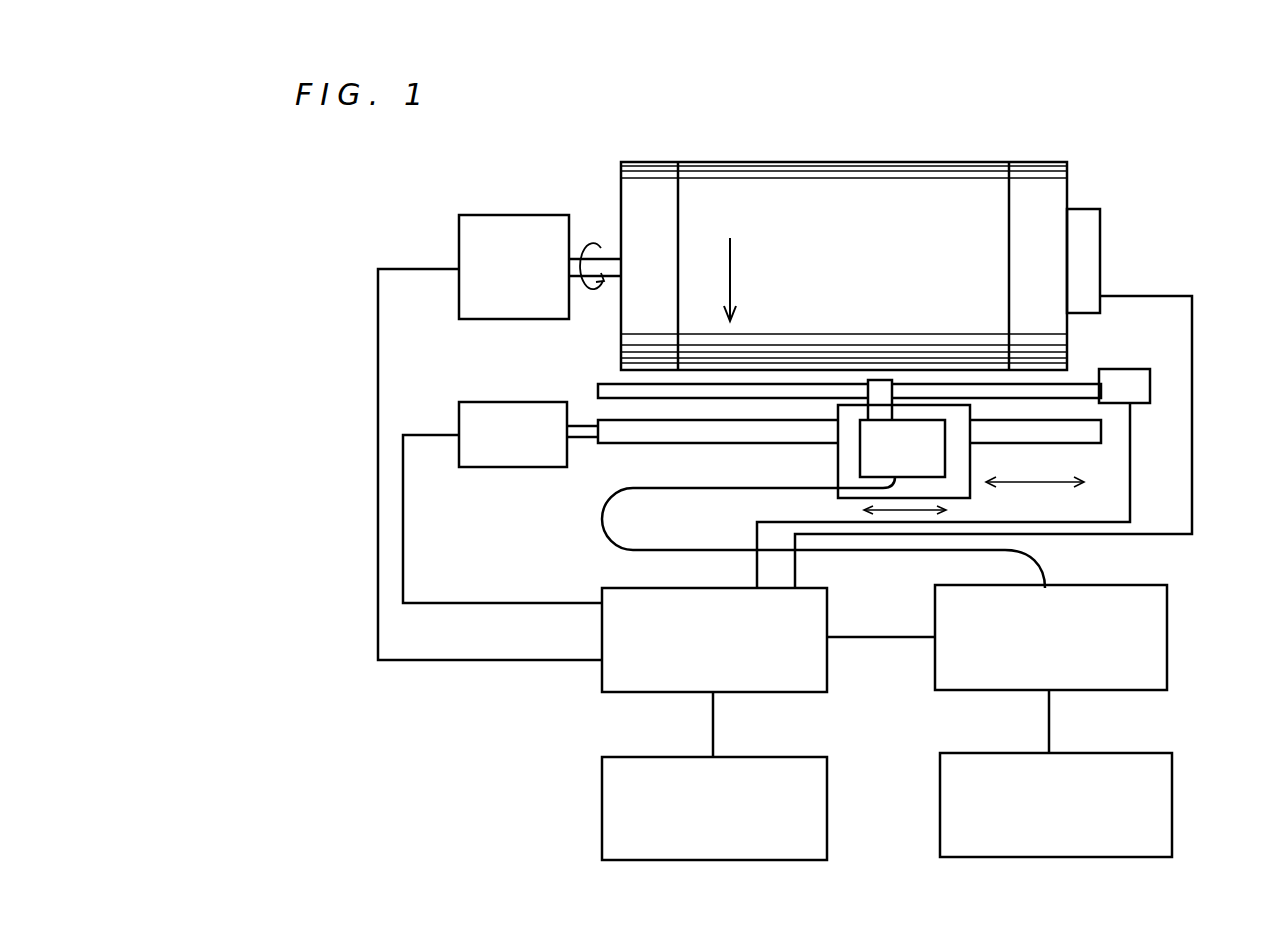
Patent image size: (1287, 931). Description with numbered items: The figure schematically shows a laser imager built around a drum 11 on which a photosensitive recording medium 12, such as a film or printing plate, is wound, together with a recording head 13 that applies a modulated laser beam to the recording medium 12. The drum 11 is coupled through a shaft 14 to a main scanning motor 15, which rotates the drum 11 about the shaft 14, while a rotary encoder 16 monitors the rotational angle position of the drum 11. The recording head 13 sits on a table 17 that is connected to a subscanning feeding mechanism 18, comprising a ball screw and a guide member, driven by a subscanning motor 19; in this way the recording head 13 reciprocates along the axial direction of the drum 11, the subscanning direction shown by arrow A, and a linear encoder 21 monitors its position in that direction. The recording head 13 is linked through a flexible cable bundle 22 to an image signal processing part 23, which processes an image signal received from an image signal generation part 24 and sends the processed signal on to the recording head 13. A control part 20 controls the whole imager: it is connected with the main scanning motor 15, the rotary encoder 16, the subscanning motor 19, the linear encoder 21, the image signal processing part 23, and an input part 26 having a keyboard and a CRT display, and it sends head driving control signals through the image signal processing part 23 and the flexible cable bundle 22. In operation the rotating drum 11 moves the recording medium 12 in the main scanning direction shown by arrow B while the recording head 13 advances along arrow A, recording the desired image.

The drum 11 is at (638, 187).
The photosensitive recording medium 12 is at (910, 190).
The recording head 13 is at (933, 460).
The shaft 14 is at (597, 283).
The main scanning motor 15 is at (505, 228).
The rotary encoder 16 is at (1090, 230).
The table 17 is at (847, 472).
The subscanning feeding mechanism 18 is at (622, 436).
The subscanning motor 19 is at (490, 452).
The control part 20 is at (602, 677).
The linear encoder 21 is at (1133, 376).
The flexible cable bundle 22 is at (608, 538).
The image signal processing part 23 is at (1167, 657).
The image signal generation part 24 is at (1172, 800).
The input part 26 is at (602, 828).
The subscanning direction A is at (1057, 480).
The main scanning direction B is at (732, 267).